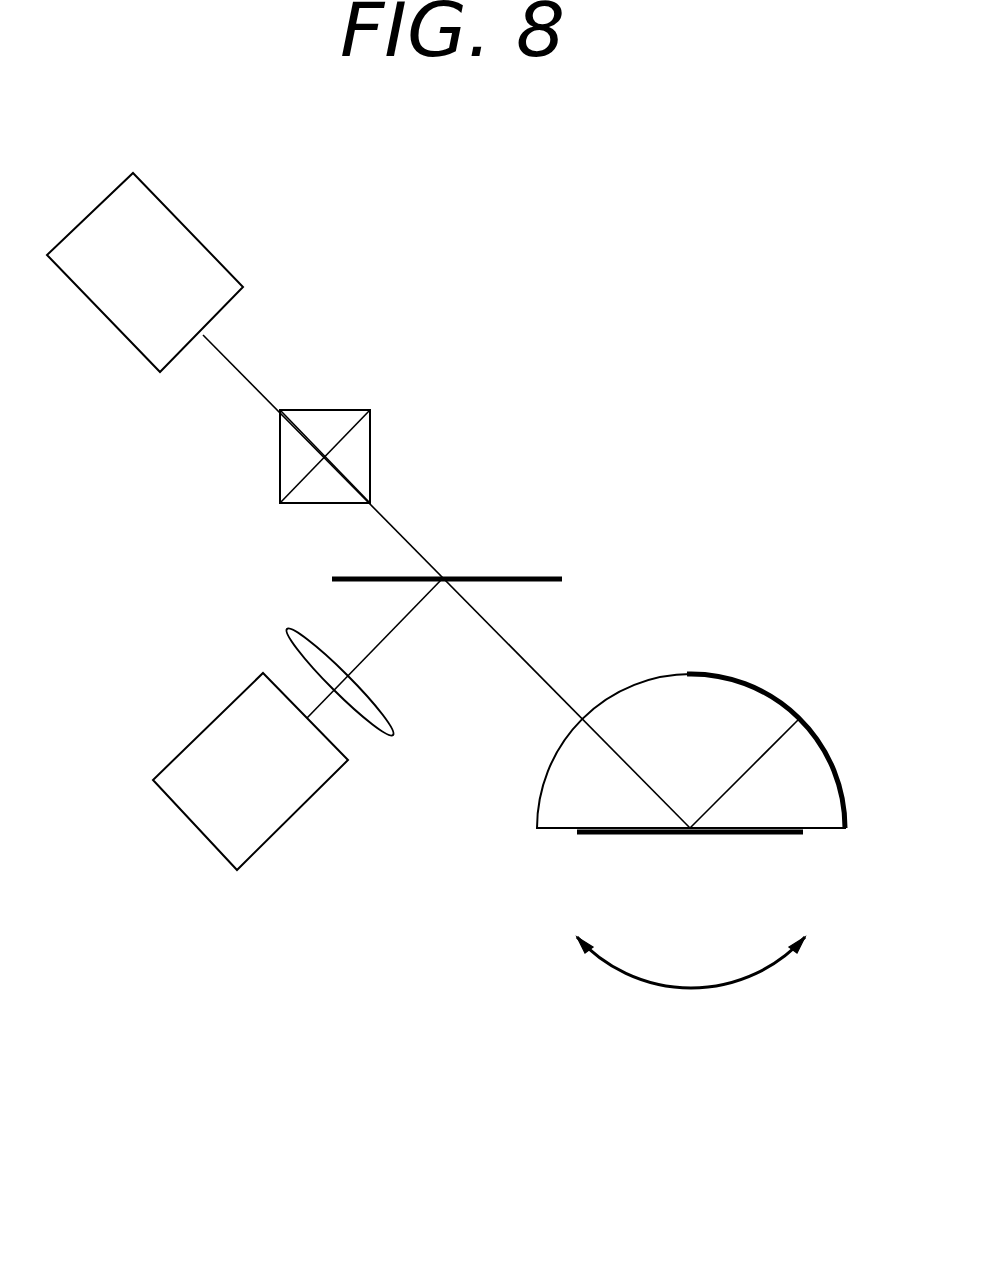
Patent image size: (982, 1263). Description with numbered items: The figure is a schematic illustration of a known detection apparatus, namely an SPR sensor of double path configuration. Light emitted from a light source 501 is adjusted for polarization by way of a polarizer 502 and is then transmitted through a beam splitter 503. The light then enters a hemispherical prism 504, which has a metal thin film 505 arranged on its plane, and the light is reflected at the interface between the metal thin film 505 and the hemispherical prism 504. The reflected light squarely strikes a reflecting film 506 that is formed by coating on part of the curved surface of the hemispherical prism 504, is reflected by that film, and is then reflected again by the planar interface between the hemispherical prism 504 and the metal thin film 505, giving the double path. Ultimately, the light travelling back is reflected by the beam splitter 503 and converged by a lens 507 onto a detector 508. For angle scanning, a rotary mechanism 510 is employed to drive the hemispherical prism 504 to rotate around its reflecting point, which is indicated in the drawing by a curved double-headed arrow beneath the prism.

The light source 501 is at (190, 227).
The polarizer 502 is at (343, 408).
The beam splitter 503 is at (333, 580).
The hemispherical prism 504 is at (630, 680).
The metal thin film 505 is at (758, 833).
The reflecting film 506 is at (807, 713).
The lens 507 is at (387, 737).
The detector 508 is at (207, 727).
The rotary mechanism 510 is at (687, 990).